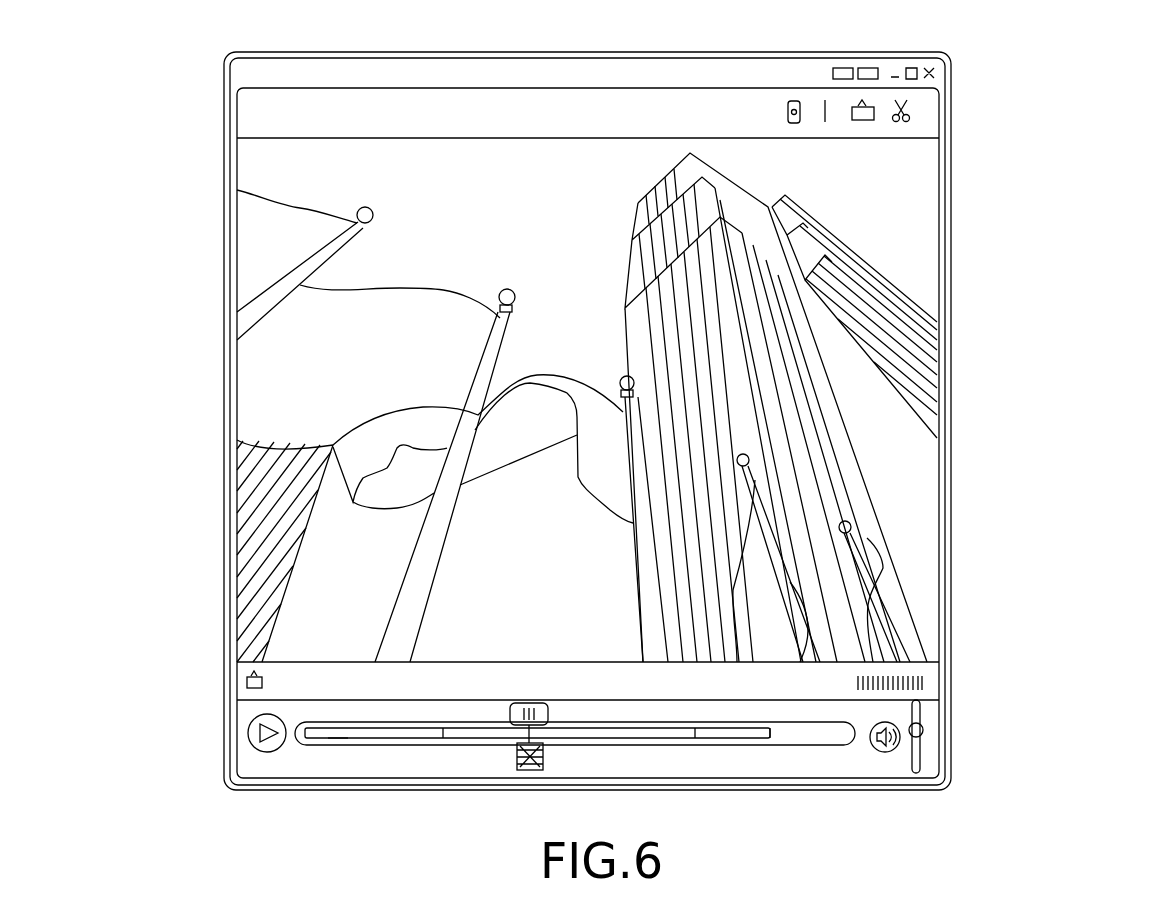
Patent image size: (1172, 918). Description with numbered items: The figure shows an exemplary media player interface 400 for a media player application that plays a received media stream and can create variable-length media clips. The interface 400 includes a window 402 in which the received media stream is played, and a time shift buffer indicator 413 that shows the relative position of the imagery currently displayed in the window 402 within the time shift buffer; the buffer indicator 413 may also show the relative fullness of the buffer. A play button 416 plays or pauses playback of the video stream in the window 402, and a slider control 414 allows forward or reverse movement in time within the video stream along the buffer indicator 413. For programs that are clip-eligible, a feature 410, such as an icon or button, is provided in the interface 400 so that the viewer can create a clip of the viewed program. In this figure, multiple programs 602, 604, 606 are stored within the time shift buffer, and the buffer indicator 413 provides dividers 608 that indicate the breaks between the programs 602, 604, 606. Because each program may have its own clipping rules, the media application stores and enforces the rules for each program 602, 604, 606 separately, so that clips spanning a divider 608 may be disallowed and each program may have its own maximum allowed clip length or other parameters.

The media player interface 400 is at (1046, 73).
The window 402 is at (898, 230).
The clip creation feature 410 is at (530, 770).
The time shift buffer indicator 413 is at (802, 700).
The slider control 414 is at (237, 697).
The play button 416 is at (253, 732).
The program 602 is at (338, 737).
The program 604 is at (633, 732).
The program 606 is at (765, 736).
The divider 608 is at (443, 737).